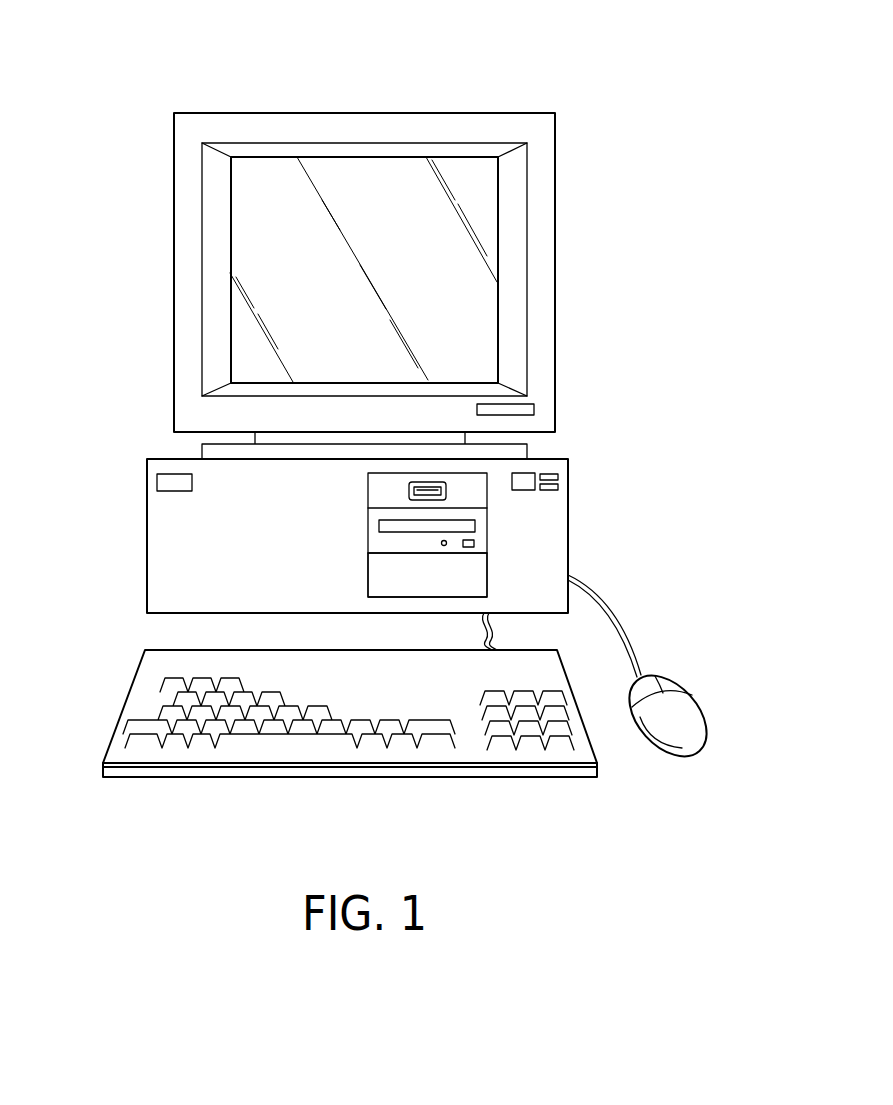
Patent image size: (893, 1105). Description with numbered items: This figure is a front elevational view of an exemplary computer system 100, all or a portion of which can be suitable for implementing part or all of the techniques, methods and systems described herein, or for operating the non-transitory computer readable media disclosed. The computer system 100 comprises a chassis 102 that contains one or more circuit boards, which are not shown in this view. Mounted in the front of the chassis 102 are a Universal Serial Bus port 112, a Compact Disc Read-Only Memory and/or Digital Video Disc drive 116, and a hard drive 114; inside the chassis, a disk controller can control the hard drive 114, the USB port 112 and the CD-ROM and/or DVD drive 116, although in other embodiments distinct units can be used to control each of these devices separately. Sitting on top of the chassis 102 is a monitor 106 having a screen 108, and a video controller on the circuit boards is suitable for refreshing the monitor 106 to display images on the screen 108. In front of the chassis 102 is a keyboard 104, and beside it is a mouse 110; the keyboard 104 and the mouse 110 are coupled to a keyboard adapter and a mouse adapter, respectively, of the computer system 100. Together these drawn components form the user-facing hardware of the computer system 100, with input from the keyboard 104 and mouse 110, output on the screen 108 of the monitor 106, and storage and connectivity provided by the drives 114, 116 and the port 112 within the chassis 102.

The computer system 100 is at (553, 79).
The chassis 102 is at (147, 537).
The keyboard 104 is at (127, 700).
The monitor 106 is at (253, 113).
The screen 108 is at (278, 274).
The mouse 110 is at (687, 708).
The Universal Serial Bus (USB) port 112 is at (448, 486).
The hard drive 114 is at (478, 574).
The CD-ROM and/or DVD drive 116 is at (478, 533).